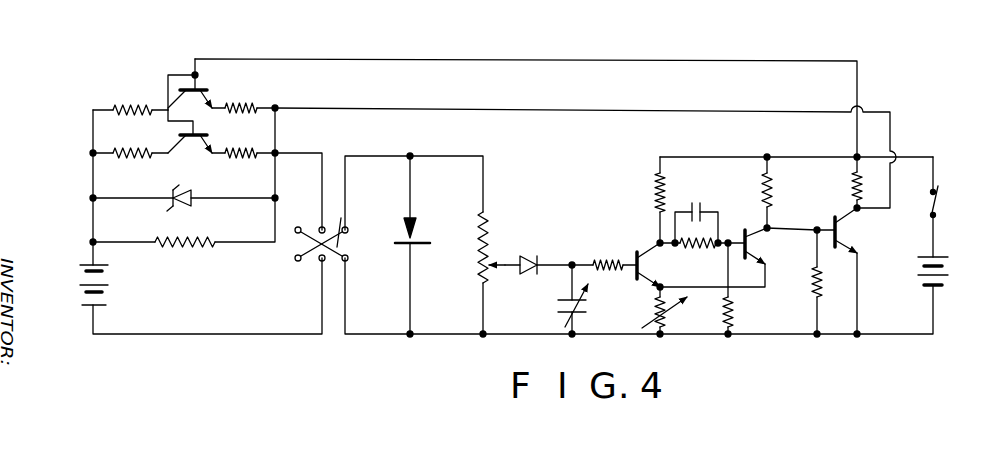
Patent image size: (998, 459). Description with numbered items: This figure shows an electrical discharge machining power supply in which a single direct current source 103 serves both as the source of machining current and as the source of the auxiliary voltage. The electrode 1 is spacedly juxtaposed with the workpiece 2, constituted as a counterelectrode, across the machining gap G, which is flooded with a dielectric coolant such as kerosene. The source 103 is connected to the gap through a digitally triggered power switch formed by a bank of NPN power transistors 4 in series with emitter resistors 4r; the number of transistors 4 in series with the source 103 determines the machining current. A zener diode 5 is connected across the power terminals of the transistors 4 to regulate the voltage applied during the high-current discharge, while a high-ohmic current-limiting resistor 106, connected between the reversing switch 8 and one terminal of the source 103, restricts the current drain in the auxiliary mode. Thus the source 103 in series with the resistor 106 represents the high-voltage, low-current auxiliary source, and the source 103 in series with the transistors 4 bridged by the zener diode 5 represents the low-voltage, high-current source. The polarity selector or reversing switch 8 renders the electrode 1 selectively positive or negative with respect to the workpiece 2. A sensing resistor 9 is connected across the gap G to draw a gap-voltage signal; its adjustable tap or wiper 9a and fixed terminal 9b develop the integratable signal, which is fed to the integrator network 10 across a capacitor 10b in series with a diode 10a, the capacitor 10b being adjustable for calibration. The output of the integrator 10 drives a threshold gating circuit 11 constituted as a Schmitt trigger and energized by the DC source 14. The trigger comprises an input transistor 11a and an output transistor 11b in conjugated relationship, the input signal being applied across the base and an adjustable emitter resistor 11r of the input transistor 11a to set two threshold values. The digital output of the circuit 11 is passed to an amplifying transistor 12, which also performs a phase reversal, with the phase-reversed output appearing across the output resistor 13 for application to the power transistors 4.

The electrode 1 is at (408, 211).
The workpiece 2 is at (423, 248).
The machining gap G is at (407, 245).
The NPN power transistors 4 is at (199, 91).
The emitter resistors 4r is at (247, 107).
The zener diode 5 is at (181, 187).
The polarity selector or reversing switch 8 is at (313, 261).
The sensing resistor 9 is at (489, 285).
The adjustable tap or wiper 9a is at (503, 260).
The fixed terminal 9b is at (482, 338).
The integrator network 10 is at (569, 274).
The diode 10a is at (523, 274).
The capacitor 10b is at (586, 309).
The threshold gating circuit 11 is at (727, 226).
The input transistor 11a is at (648, 263).
The output transistor 11b is at (758, 241).
The emitter resistor 11r is at (668, 322).
The amplifying transistor 12 is at (852, 231).
The output resistor 13 is at (850, 186).
The DC source 14 is at (948, 279).
The direct current source 103 is at (110, 298).
The high-ohmic current-limiting resistor 106 is at (197, 249).